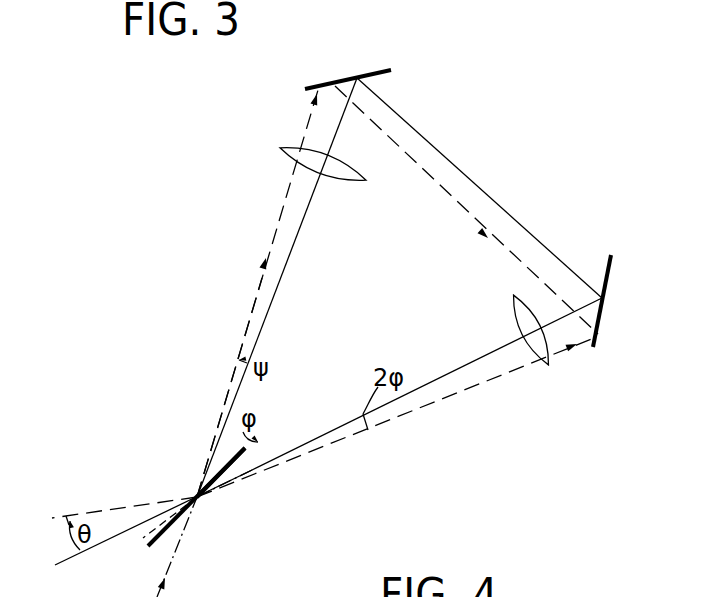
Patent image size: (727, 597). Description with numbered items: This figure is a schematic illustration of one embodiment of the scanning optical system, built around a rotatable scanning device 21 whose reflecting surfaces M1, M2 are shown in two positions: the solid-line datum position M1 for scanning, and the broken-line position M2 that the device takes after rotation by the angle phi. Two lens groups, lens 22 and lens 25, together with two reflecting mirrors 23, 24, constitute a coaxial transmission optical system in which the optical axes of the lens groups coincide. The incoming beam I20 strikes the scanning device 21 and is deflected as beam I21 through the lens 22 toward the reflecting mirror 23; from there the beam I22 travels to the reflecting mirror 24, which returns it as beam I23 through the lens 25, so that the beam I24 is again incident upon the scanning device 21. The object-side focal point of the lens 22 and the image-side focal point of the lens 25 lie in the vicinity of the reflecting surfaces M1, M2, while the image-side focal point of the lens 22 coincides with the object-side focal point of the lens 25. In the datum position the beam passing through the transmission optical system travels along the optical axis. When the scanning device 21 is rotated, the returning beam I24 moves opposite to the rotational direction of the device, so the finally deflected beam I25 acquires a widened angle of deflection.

The scanning device 21 is at (148, 538).
The lens 22 is at (549, 365).
The reflecting mirror 23 is at (612, 265).
The reflecting mirror 24 is at (370, 72).
The lens 25 is at (342, 181).
The beam I20 is at (185, 535).
The beam I21 is at (430, 406).
The beam I22 is at (455, 207).
The beam I23 is at (307, 125).
The beam I24 is at (272, 242).
The beam I25 is at (107, 508).
The reflecting surface M1 is at (247, 457).
The reflecting surface M2 is at (152, 530).